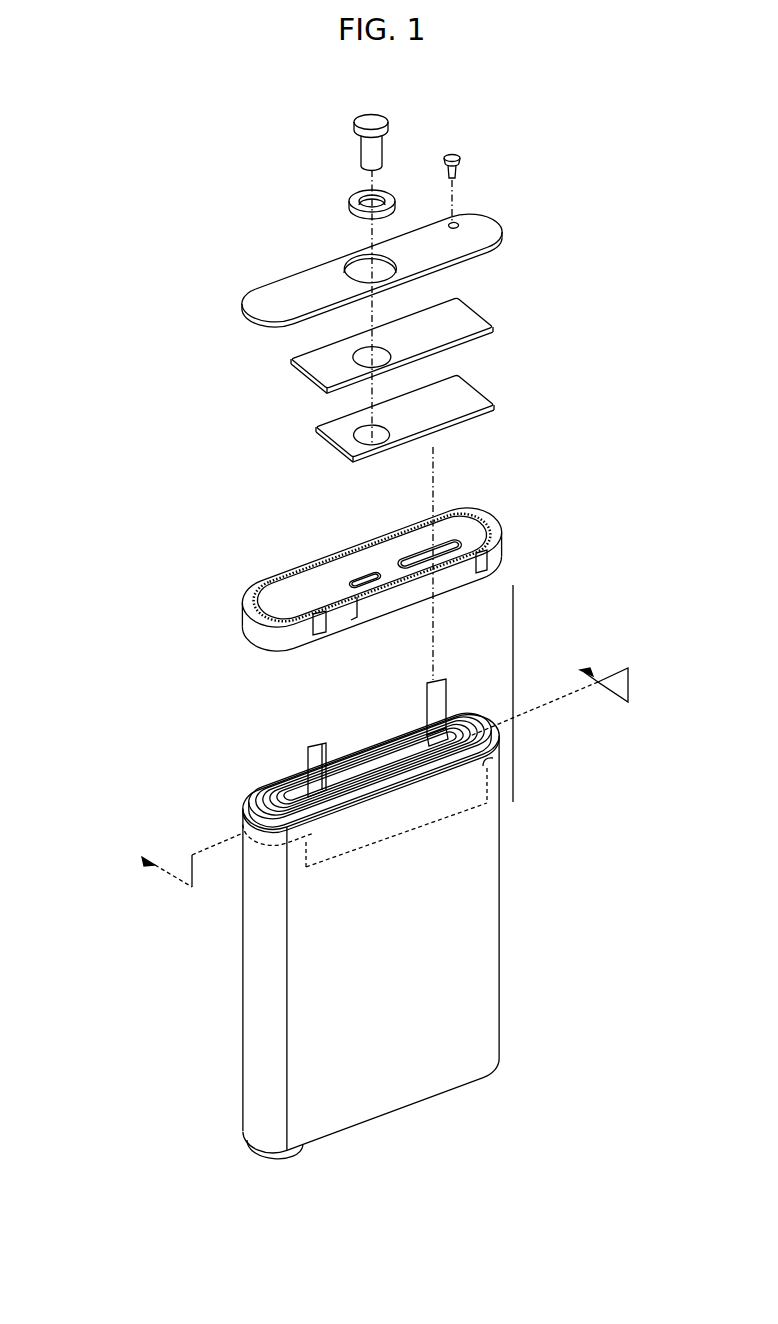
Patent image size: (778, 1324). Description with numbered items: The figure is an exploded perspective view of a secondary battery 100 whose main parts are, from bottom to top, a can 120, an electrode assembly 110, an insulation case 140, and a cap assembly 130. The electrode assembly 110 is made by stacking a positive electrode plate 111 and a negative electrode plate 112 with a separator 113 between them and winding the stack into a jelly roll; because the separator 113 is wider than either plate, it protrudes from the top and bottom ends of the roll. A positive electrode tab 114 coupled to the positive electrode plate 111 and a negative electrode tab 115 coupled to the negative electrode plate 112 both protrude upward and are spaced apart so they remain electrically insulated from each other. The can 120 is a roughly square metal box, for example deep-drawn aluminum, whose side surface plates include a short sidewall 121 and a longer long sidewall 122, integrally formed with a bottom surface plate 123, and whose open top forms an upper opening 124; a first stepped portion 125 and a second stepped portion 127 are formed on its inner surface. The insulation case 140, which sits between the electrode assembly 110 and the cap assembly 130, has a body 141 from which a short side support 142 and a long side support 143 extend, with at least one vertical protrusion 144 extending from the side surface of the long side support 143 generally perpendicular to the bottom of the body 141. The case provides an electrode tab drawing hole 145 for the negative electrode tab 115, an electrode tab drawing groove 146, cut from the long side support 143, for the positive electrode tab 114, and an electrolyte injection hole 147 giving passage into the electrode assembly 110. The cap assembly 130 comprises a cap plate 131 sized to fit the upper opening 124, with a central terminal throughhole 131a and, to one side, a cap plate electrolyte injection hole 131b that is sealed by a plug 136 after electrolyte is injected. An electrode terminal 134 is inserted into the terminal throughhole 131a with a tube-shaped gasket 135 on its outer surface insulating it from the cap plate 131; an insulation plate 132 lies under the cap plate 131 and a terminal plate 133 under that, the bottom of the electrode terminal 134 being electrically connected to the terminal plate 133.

The secondary battery 100 is at (111, 86).
The electrode assembly 110 is at (546, 676).
The positive electrode plate 111 is at (492, 723).
The negative electrode plate 112 is at (467, 712).
The separator 113 is at (478, 716).
The positive electrode tab 114 is at (318, 755).
The negative electrode tab 115 is at (428, 700).
The can 120 is at (168, 1010).
The short sidewall 121 is at (258, 1008).
The long sidewall 122 is at (305, 1060).
The bottom surface plate 123 is at (262, 1160).
The upper opening 124 is at (500, 740).
The first stepped portion 125 is at (492, 760).
The second stepped portion 127 is at (458, 806).
The cap assembly 130 is at (246, 221).
The cap plate 131 is at (263, 309).
The terminal throughhole 131a is at (352, 254).
The cap plate electrolyte injection hole 131b is at (458, 224).
The insulation plate 132 is at (313, 361).
The terminal plate 133 is at (328, 425).
The electrode terminal 134 is at (366, 114).
The gasket 135 is at (353, 196).
The plug 136 is at (455, 152).
The insulation case 140 is at (256, 572).
The body 141 is at (404, 540).
The short side support 142 is at (246, 629).
The long side support 143 is at (344, 548).
The vertical protrusion 144 is at (487, 569).
The electrode tab drawing hole 145 is at (453, 536).
The electrode tab drawing groove 146 is at (347, 620).
The electrolyte injection hole 147 is at (350, 578).